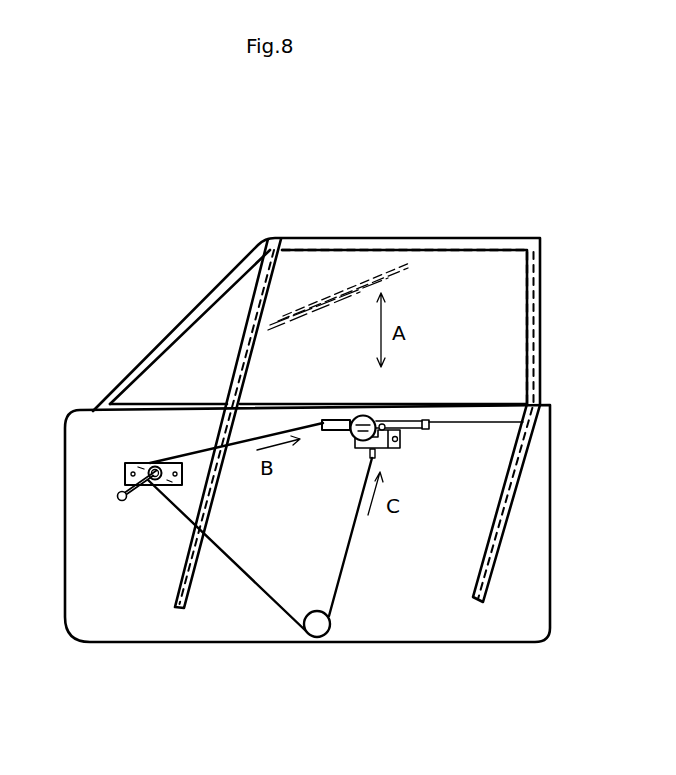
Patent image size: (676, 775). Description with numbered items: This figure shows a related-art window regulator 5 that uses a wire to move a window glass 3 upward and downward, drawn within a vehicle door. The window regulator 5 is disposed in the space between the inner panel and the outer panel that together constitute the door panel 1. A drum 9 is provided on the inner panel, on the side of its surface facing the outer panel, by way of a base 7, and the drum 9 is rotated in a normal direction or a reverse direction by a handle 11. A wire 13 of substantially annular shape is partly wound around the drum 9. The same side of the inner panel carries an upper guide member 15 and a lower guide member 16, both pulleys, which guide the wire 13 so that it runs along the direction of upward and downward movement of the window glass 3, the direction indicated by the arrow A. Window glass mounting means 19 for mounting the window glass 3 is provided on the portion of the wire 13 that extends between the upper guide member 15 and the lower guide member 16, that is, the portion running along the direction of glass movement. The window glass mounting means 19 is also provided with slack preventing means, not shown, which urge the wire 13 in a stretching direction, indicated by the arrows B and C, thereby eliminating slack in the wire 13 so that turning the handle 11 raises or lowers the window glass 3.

The door panel 1 is at (480, 493).
The window glass 3 is at (493, 290).
The window regulator 5 is at (375, 539).
The base 7 is at (123, 479).
The drum 9 is at (122, 463).
The handle 11 is at (117, 499).
The wire 13 is at (268, 600).
The upper guide member (pulley) 15 is at (373, 420).
The lower guide member (pulley) 16 is at (318, 627).
The window glass mounting means 19 is at (427, 423).